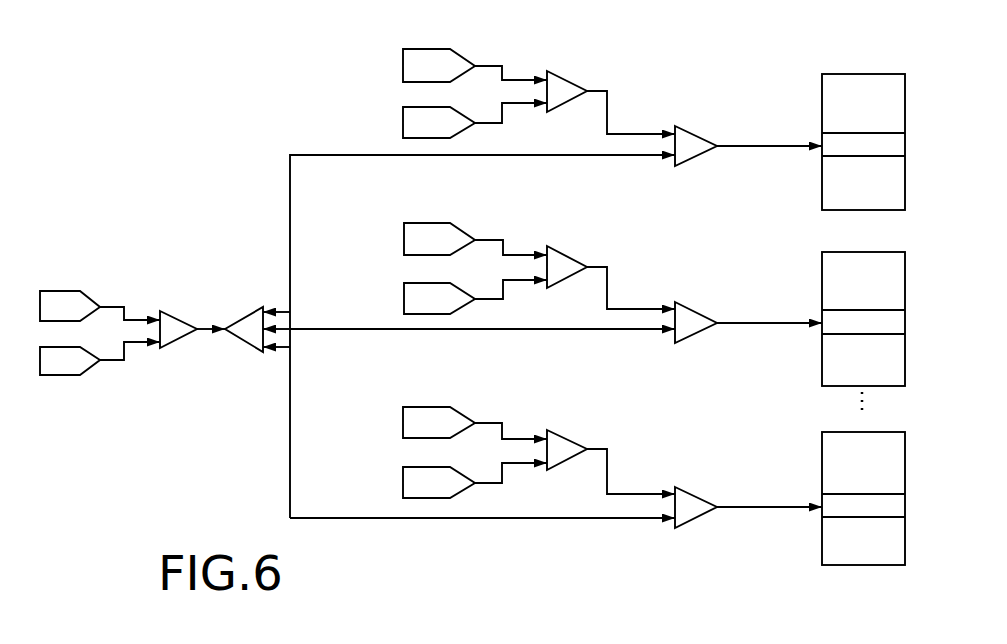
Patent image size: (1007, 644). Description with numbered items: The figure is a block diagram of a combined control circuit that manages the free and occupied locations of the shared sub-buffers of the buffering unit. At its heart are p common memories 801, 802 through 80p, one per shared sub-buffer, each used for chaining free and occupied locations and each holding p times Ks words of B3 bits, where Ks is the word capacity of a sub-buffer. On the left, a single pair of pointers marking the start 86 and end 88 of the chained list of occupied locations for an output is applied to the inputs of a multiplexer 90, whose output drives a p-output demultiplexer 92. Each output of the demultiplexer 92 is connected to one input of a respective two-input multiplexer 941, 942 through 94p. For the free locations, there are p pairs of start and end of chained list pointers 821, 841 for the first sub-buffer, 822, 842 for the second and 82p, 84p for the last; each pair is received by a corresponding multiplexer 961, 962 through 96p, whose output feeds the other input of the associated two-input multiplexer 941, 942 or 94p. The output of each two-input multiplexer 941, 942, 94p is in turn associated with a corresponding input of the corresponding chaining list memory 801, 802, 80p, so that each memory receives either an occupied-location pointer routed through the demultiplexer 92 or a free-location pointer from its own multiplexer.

The start of chained list pointer for occupied locations 86 is at (82, 304).
The end of chained list pointer for occupied locations 88 is at (82, 365).
The multiplexer 90 is at (170, 333).
The p-output demultiplexer 92 is at (252, 332).
The start of chained list pointer for free locations 821 is at (447, 63).
The end of chained list pointer for free locations 841 is at (450, 125).
The multiplexer 961 is at (563, 90).
The two-input multiplexer 941 is at (688, 147).
The common memory 801 is at (878, 119).
The start of chained list pointer for free locations 822 is at (447, 237).
The end of chained list pointer for free locations 842 is at (450, 301).
The multiplexer 962 is at (563, 266).
The two-input multiplexer 942 is at (688, 325).
The common memory 802 is at (886, 298).
The start of chained list pointer for free locations 82p is at (447, 420).
The end of chained list pointer for free locations 84p is at (450, 485).
The multiplexer 96p is at (563, 449).
The two-input multiplexer 94p is at (688, 509).
The common memory 80p is at (886, 480).